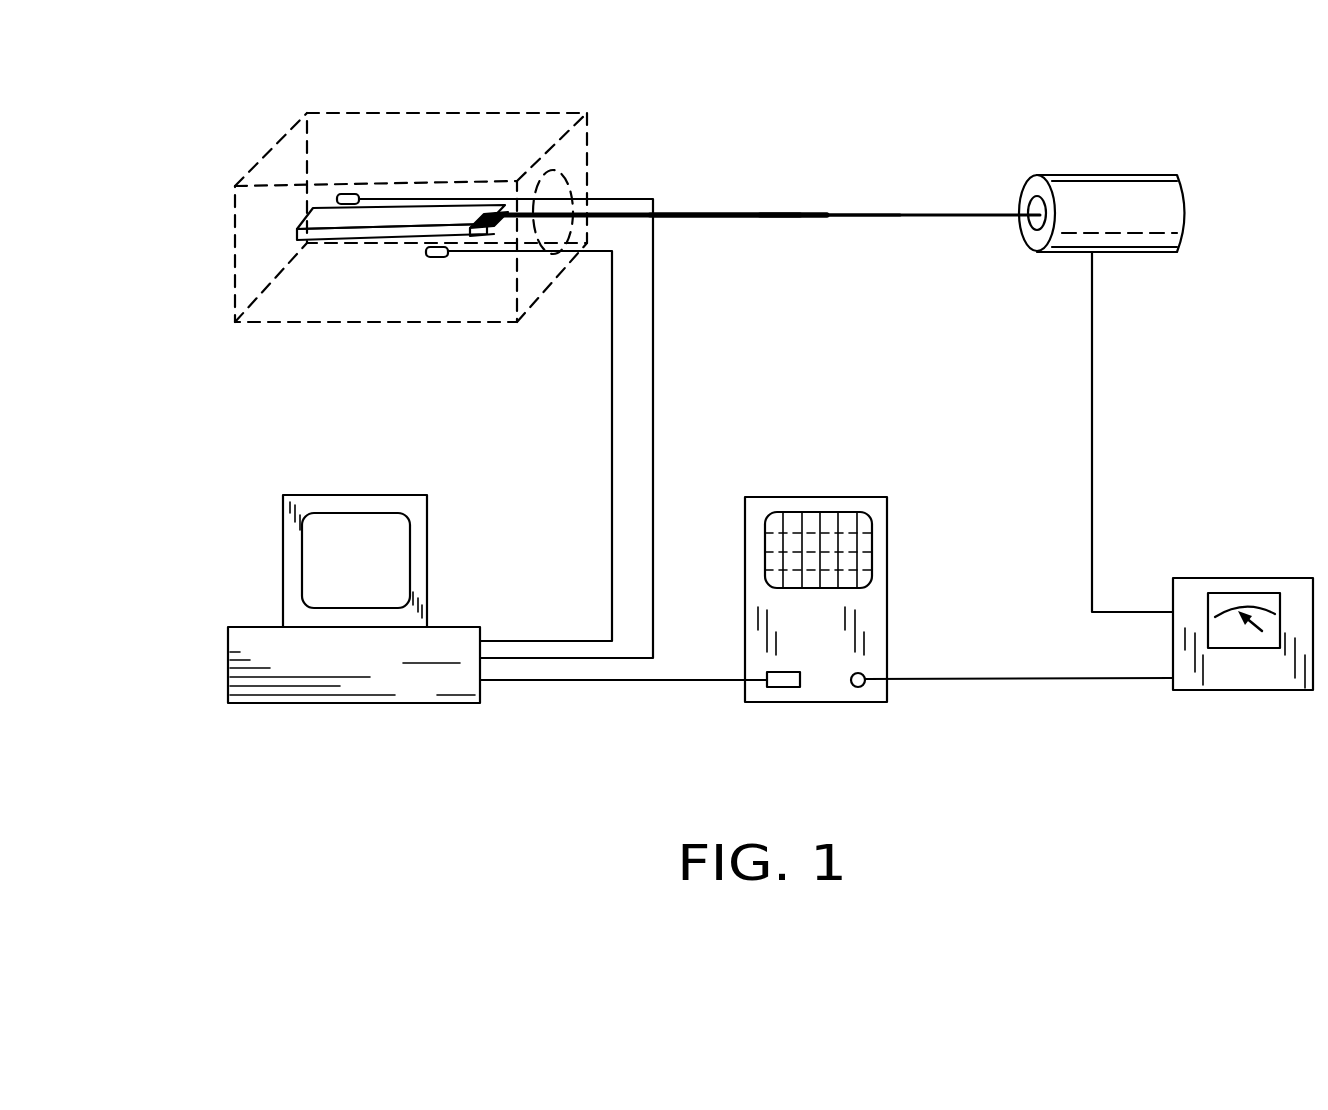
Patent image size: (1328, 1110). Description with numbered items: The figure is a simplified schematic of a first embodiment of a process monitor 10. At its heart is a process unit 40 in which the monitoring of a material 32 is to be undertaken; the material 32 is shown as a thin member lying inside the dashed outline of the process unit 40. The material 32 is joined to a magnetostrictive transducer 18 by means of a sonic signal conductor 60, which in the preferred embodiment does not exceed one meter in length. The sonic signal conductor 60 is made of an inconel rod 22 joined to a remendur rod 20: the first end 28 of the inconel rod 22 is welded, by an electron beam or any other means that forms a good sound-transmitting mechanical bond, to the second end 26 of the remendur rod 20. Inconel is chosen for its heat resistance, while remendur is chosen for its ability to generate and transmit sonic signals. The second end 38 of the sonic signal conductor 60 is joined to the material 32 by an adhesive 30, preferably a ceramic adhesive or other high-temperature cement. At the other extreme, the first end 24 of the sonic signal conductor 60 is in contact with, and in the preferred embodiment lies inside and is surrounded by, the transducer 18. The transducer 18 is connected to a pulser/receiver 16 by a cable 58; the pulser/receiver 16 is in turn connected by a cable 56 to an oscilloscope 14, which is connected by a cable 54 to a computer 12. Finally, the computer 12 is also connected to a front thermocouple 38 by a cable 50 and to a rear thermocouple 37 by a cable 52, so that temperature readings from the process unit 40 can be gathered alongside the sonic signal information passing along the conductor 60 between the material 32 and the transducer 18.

The process monitor 10 is at (202, 112).
The computer 12 is at (355, 703).
The oscilloscope 14 is at (810, 702).
The pulser/receiver 16 is at (1233, 690).
The magnetostrictive transducer 18 is at (1100, 173).
The remendur rod 20 is at (880, 212).
The inconel rod 22 is at (735, 212).
The first end of sonic signal conductor 24 is at (1022, 245).
The second end of remendur rod 26 is at (840, 218).
The first end of inconel rod 28 is at (800, 218).
The adhesive 30 is at (485, 237).
The material 32 is at (325, 207).
The rear thermocouple 37 is at (349, 193).
The second end of sonic signal conductor 38 is at (437, 257).
The process unit 40 is at (233, 272).
The cable 50 is at (612, 452).
The cable 52 is at (655, 415).
The cable 54 is at (585, 680).
The cable 56 is at (960, 680).
The cable 58 is at (1093, 445).
The sonic signal conductor 60 is at (808, 150).